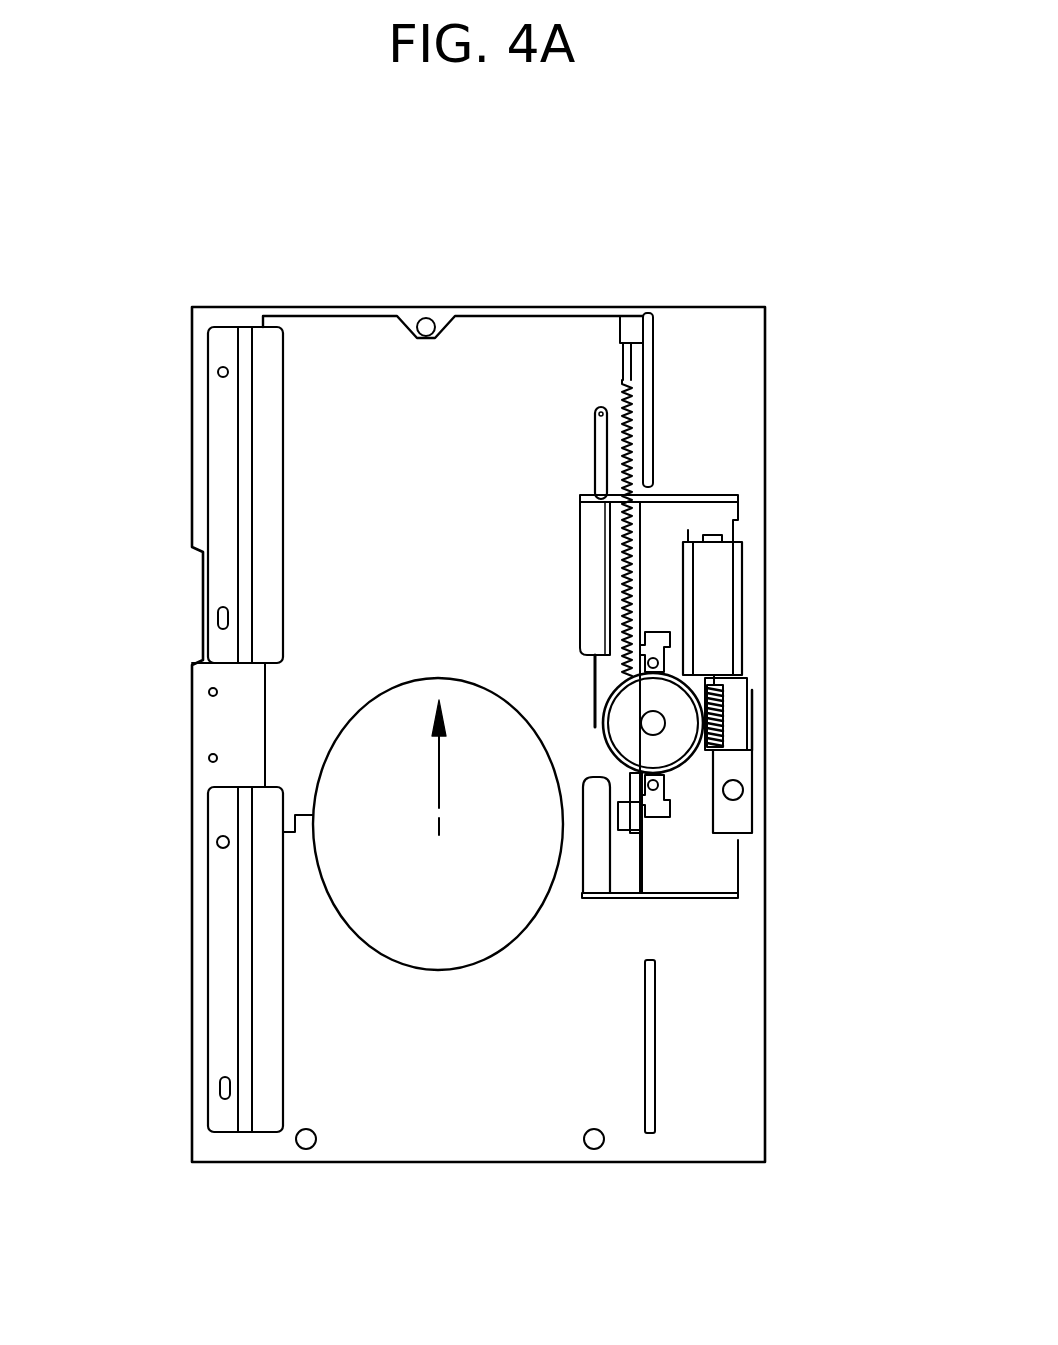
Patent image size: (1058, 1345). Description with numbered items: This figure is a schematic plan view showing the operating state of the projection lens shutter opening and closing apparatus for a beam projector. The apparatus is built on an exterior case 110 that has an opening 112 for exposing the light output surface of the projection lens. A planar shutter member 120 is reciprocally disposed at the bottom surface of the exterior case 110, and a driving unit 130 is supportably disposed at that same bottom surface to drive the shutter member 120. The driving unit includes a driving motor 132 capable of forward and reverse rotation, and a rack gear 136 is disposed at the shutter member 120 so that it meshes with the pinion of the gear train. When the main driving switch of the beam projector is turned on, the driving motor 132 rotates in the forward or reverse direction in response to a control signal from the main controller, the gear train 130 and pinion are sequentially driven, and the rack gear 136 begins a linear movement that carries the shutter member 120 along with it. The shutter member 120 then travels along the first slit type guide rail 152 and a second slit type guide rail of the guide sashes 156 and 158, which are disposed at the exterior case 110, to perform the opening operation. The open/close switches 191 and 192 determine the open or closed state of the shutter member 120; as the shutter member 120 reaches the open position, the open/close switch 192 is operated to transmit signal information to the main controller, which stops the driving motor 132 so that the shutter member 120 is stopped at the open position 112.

The exterior case 110 is at (451, 1112).
The opening 112 is at (507, 905).
The shutter member 120 is at (362, 398).
The driving unit 130 is at (682, 721).
The driving motor 132 is at (712, 600).
The rack gear 136 is at (630, 428).
The first slit type guide rail 152 is at (603, 415).
The guide sash 156 is at (225, 998).
The guide sash 158 is at (225, 452).
The open/close switch 191 is at (670, 808).
The open/close switch 192 is at (668, 643).